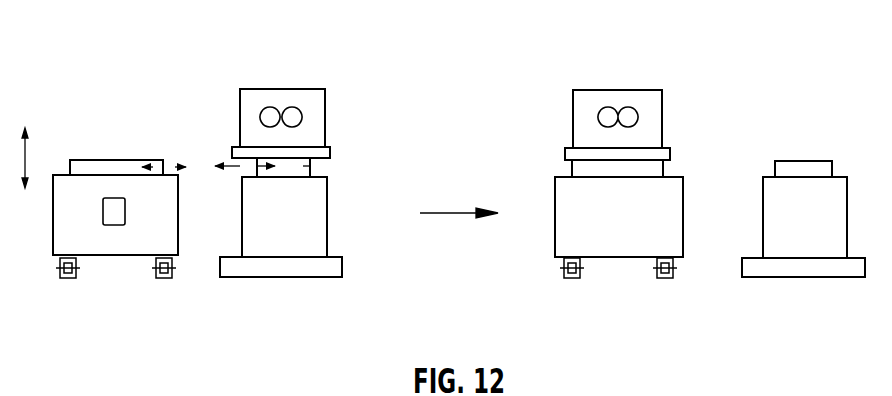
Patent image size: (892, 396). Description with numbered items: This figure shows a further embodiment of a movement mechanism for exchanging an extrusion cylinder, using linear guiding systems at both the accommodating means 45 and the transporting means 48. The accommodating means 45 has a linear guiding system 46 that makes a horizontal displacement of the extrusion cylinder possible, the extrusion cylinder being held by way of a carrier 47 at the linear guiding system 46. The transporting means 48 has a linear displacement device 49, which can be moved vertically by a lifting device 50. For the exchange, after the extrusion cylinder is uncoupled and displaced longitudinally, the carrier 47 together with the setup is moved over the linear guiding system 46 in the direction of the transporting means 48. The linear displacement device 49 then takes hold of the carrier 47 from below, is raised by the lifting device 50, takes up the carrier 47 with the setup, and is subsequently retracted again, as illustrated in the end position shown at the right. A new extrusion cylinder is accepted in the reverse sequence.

The accommodating means 45 is at (291, 183).
The linear guiding system 46 is at (311, 167).
The carrier 47 is at (232, 150).
The transporting means 48 is at (107, 247).
The linear displacement device 49 is at (97, 160).
The lifting device 50 is at (125, 209).